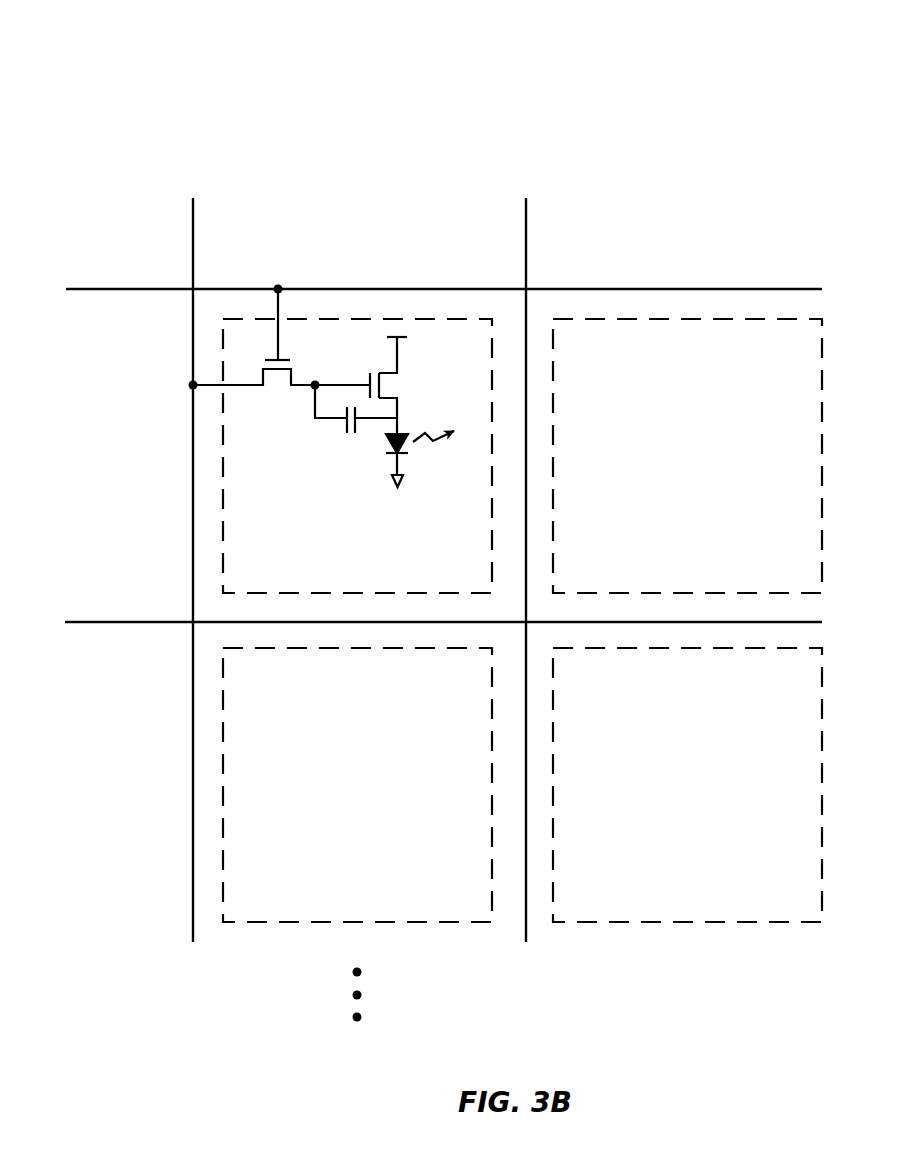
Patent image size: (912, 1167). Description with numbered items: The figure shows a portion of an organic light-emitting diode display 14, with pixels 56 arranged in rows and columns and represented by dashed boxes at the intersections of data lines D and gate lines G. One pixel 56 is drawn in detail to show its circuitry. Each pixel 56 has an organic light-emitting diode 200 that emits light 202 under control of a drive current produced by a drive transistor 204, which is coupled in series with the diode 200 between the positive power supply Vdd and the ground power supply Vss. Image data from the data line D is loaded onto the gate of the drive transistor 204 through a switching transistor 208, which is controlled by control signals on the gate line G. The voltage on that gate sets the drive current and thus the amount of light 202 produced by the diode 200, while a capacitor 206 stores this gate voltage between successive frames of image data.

The display 14 is at (662, 84).
The pixel 56 is at (223, 550).
The organic light-emitting diode 200 is at (376, 451).
The light 202 is at (425, 436).
The drive transistor 204 is at (414, 387).
The capacitor 206 is at (346, 442).
The switching transistor 208 is at (305, 366).